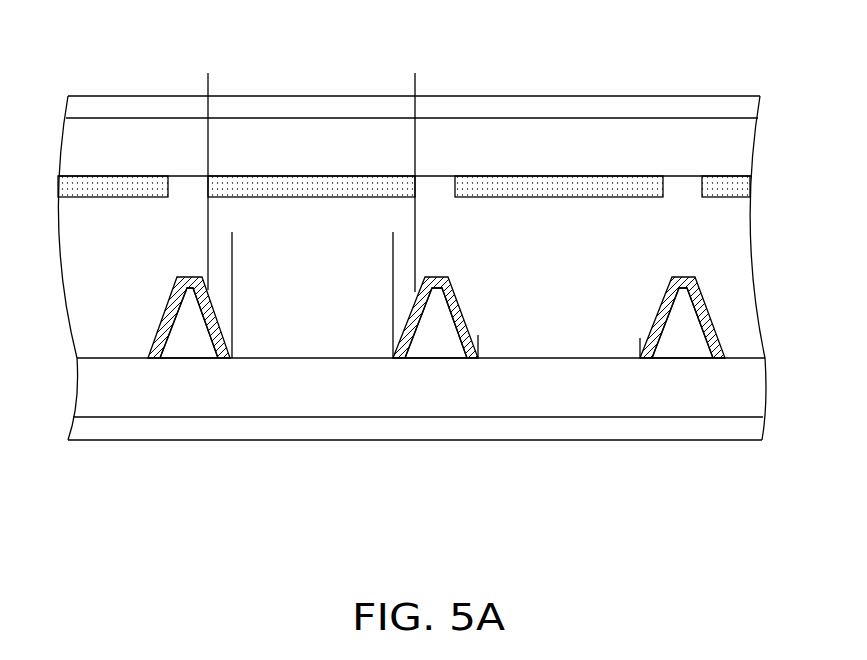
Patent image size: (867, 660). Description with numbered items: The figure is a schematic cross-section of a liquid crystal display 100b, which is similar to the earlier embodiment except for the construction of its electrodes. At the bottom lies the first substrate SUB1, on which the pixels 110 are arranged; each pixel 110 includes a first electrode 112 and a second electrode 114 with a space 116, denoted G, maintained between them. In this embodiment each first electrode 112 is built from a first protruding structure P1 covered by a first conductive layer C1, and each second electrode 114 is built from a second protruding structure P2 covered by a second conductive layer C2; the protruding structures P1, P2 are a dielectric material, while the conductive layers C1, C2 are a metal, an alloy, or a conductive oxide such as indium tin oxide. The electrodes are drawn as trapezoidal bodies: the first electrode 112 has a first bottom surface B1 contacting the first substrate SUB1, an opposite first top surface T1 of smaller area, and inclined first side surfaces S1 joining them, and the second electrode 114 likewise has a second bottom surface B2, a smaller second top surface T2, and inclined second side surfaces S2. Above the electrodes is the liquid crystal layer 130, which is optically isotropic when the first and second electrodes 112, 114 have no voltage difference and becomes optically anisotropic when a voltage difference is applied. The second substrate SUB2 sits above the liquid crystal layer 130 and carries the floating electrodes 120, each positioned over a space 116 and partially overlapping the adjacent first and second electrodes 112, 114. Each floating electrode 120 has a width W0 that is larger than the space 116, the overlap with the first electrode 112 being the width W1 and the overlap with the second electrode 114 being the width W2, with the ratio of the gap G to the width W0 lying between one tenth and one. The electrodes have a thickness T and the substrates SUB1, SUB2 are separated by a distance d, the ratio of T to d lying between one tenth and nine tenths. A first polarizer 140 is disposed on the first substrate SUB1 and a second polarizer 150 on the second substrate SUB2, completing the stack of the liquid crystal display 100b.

The liquid crystal display 100b is at (760, 480).
The pixel 110 is at (432, 409).
The first electrode 112 is at (436, 386).
The second electrode 114 is at (432, 386).
The space 116 is at (393, 238).
The floating electrode 120 is at (108, 187).
The liquid crystal layer 130 is at (745, 212).
The first polarizer 140 is at (747, 427).
The second polarizer 150 is at (743, 107).
The first substrate SUB1 is at (717, 413).
The second substrate SUB2 is at (708, 150).
The first protruding structure P1 is at (447, 355).
The second protruding structure P2 is at (200, 355).
The first conductive layer C1 is at (467, 355).
The second conductive layer C2 is at (217, 355).
The first top surface T1 is at (435, 274).
The second top surface T2 is at (189, 274).
The first side surface S1 is at (404, 327).
The second side surface S2 is at (159, 327).
The first bottom surface B1 is at (427, 363).
The second bottom surface B2 is at (191, 363).
The width of floating electrode W0 is at (415, 79).
The overlapping width with first electrode W1 is at (447, 238).
The overlapping width with second electrode W2 is at (177, 238).
The thickness of electrodes T is at (695, 277).
The distance between substrates d is at (60, 176).